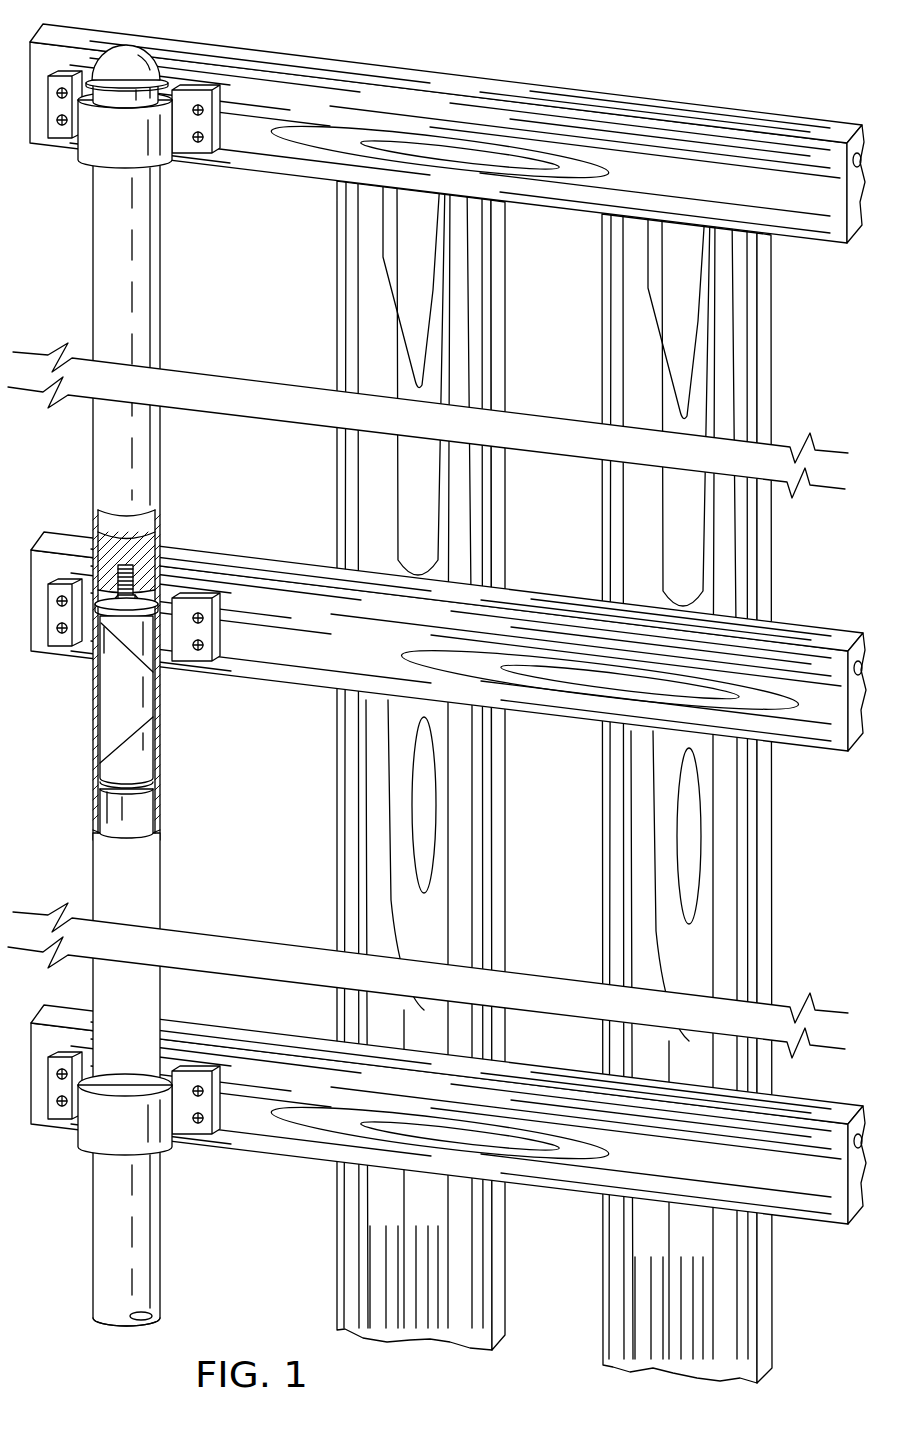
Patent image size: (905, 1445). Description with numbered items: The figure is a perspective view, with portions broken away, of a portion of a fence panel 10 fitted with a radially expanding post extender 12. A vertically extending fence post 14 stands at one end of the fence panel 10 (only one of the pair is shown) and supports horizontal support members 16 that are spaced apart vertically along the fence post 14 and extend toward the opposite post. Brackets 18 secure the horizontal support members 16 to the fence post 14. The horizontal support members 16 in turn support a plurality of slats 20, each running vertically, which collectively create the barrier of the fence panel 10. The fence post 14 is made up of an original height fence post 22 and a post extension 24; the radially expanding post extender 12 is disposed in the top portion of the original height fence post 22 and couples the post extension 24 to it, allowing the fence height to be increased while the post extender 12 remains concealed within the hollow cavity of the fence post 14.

The fence panel 10 is at (700, 76).
The radially expanding post extender 12 is at (98, 700).
The fence post 14 is at (197, 871).
The horizontal support member 16 is at (298, 177).
The bracket 18 is at (124, 163).
The slat 20 is at (346, 1247).
The original height fence post 22 is at (92, 1220).
The post extension 24 is at (97, 280).